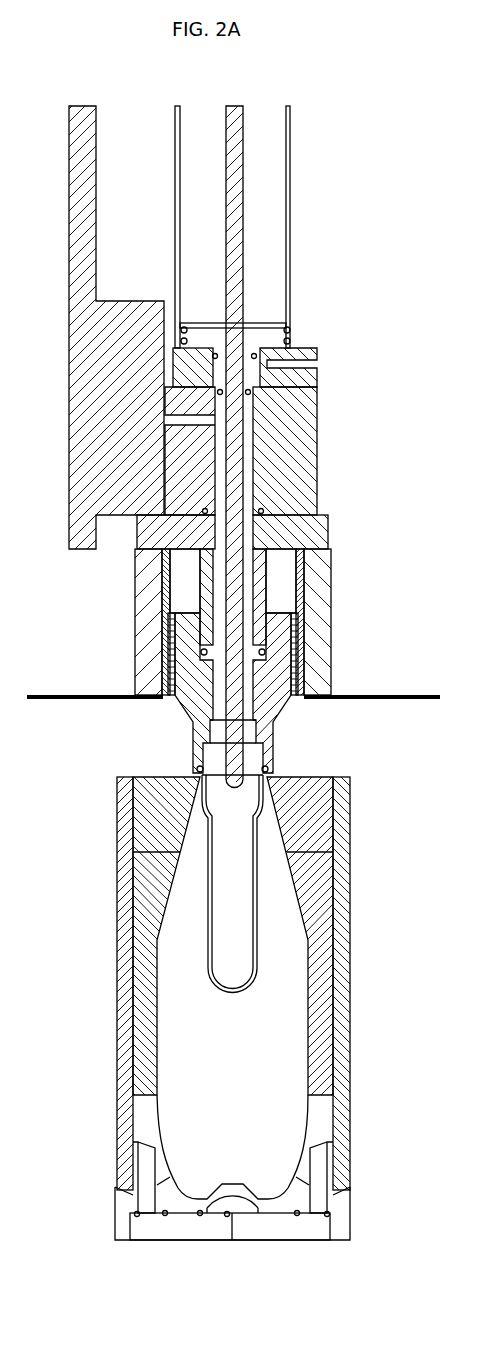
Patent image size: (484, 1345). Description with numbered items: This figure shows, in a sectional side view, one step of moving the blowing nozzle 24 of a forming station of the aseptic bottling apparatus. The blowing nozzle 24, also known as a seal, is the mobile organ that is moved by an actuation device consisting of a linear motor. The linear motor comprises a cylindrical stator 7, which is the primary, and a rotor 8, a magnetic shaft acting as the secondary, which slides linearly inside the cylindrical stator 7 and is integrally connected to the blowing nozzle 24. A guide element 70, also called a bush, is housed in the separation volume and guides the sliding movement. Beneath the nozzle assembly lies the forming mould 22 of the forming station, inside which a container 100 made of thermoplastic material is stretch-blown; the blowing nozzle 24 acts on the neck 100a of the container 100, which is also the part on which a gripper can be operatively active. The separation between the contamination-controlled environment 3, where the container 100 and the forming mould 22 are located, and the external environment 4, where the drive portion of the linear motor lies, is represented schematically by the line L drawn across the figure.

The cylindrical stator 7 is at (152, 597).
The guide element 70 is at (306, 592).
The rotor 8 is at (296, 645).
The external environment 4 is at (378, 673).
The contamination-controlled environment 3 is at (375, 741).
The line L is at (82, 695).
The blowing nozzle 24 is at (197, 713).
The neck 100a is at (268, 771).
The forming mould 22 is at (100, 857).
The container 100 is at (246, 992).